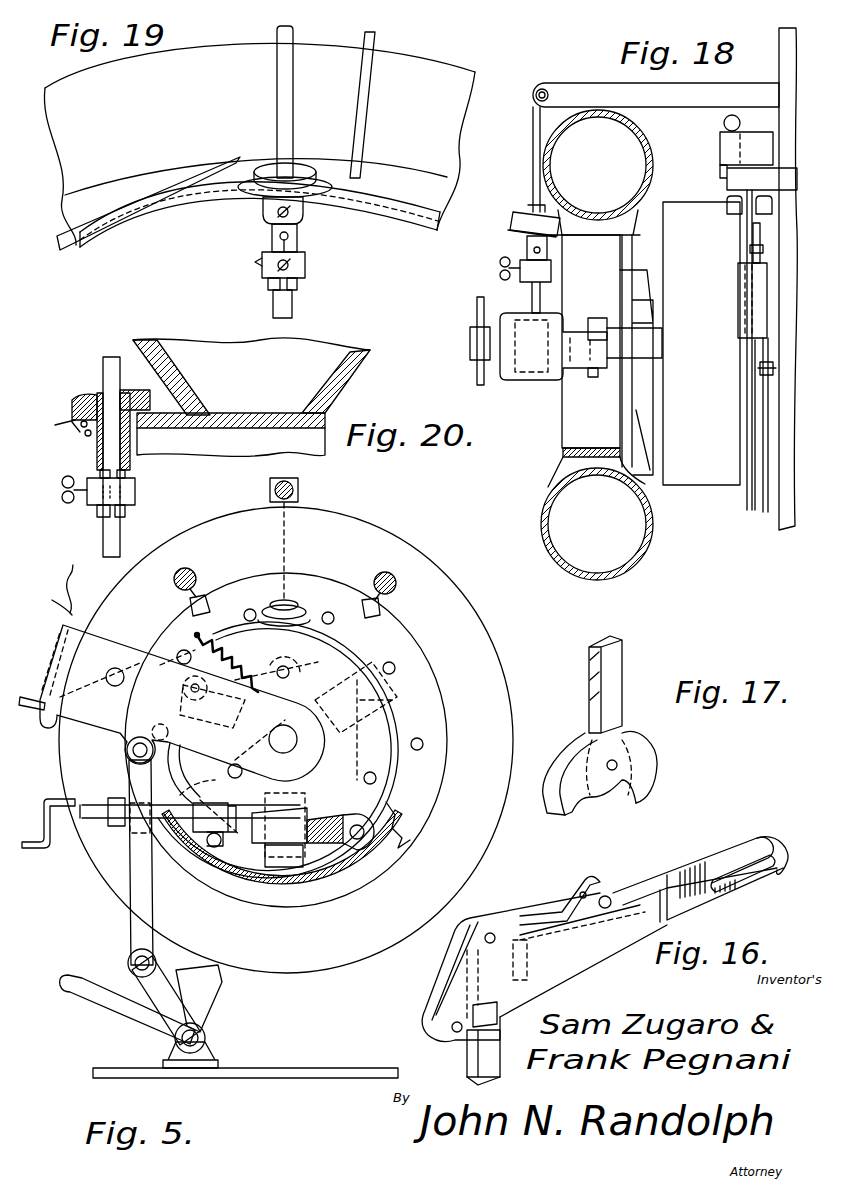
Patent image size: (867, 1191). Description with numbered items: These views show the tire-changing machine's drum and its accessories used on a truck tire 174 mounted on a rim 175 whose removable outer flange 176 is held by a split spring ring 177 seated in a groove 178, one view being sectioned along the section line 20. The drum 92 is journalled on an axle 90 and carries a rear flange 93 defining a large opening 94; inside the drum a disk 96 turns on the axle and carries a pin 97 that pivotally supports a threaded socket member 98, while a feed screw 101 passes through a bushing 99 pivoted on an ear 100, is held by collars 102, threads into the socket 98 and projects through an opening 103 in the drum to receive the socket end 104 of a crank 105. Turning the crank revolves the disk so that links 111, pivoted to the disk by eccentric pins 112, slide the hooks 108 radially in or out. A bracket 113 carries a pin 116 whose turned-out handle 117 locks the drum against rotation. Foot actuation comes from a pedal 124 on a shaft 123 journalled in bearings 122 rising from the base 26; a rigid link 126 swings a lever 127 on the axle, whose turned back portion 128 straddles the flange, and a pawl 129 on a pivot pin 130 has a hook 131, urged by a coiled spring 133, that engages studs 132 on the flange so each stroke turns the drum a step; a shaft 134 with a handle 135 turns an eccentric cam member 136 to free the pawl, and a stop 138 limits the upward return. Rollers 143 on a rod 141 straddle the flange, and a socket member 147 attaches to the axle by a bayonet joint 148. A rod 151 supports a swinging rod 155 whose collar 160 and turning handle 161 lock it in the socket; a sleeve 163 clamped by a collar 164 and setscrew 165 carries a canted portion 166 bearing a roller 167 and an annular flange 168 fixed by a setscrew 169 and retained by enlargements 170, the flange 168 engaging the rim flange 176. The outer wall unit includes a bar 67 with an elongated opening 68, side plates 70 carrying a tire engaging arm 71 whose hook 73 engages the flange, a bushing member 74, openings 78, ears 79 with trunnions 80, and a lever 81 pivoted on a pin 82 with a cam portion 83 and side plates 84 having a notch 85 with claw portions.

In FIG. 19, the section line 20 is at (284, 333).
In FIG. 5, the base 26 is at (275, 1068).
In FIG. 16, the bar 67 is at (690, 905).
In FIG. 16, the elongated opening 68 is at (735, 885).
In FIG. 16, the side plates 70 is at (600, 945).
In FIG. 16, the tire engaging arm 71 is at (467, 1046).
In FIG. 19, the hook-like end 73 is at (370, 124).
In FIG. 16, the hook-like end 73 is at (470, 1075).
In FIG. 16, the bushing member 74 is at (432, 1010).
In FIG. 16, the opening 78 is at (500, 1017).
In FIG. 16, the upstanding ears 79 is at (572, 900).
In FIG. 16, the trunnion 80 is at (598, 890).
In FIG. 17, the lever 81 is at (625, 678).
In FIG. 17, the pin 82 is at (611, 762).
In FIG. 17, the rounded cam portion 83 is at (632, 805).
In FIG. 17, the plates 84 is at (652, 735).
In FIG. 17, the notch 85 is at (578, 812).
In FIG. 5, the axle 90 is at (278, 725).
In FIG. 18, the drum 92 is at (680, 485).
In FIG. 5, the drum 92 is at (255, 881).
In FIG. 18, the flange 93 is at (747, 510).
In FIG. 5, the flange 93 is at (443, 781).
In FIG. 5, the opening 94 is at (405, 738).
In FIG. 5, the disk 96 is at (378, 790).
In FIG. 5, the pin 97 is at (365, 845).
In FIG. 5, the threaded socket member 98 is at (285, 855).
In FIG. 5, the bushing 99 is at (212, 852).
In FIG. 5, the ear 100 is at (255, 870).
In FIG. 5, the feed screw 101 is at (225, 775).
In FIG. 5, the collars 102 is at (218, 798).
In FIG. 5, the opening 103 is at (205, 843).
In FIG. 5, the socket end 104 is at (112, 827).
In FIG. 5, the crank 105 is at (80, 798).
In FIG. 18, the hook 108 is at (665, 425).
In FIG. 5, the link 111 is at (287, 665).
In FIG. 5, the pins 112 is at (292, 672).
In FIG. 18, the supporting bracket 113 is at (740, 140).
In FIG. 18, the pin 116 is at (727, 168).
In FIG. 18, the handle 117 is at (724, 124).
In FIG. 5, the bearings 122 is at (215, 1058).
In FIG. 5, the shaft 123 is at (210, 1038).
In FIG. 5, the foot pedal 124 is at (110, 995).
In FIG. 18, the rigid link 126 is at (766, 515).
In FIG. 5, the rigid link 126 is at (145, 918).
In FIG. 18, the lever 127 is at (770, 312).
In FIG. 5, the lever 127 is at (125, 745).
In FIG. 18, the turned back portion 128 is at (738, 290).
In FIG. 18, the pawl 129 is at (752, 232).
In FIG. 5, the pawl 129 is at (150, 655).
In FIG. 5, the pivot pin 130 is at (108, 681).
In FIG. 5, the hook 131 is at (205, 640).
In FIG. 18, the studs 132 is at (752, 249).
In FIG. 5, the studs 132 is at (183, 650).
In FIG. 5, the coiled spring 133 is at (233, 661).
In FIG. 5, the shaft 134 is at (87, 589).
In FIG. 5, the handle 135 is at (51, 596).
In FIG. 5, the eccentric cam member 136 is at (36, 708).
In FIG. 5, the stop 138 is at (215, 992).
In FIG. 18, the rod 141 is at (727, 186).
In FIG. 5, the rod 141 is at (395, 575).
In FIG. 18, the rollers 143 is at (727, 207).
In FIG. 5, the rollers 143 is at (385, 606).
In FIG. 18, the socket member 147 is at (530, 385).
In FIG. 18, the bayonet joint 148 is at (596, 316).
In FIG. 18, the rod 151 is at (700, 93).
In FIG. 5, the rod 151 is at (300, 490).
In FIG. 19, the rod 155 is at (289, 100).
In FIG. 18, the rod 155 is at (533, 150).
In FIG. 20, the rod 155 is at (118, 528).
In FIG. 5, the rod 155 is at (290, 535).
In FIG. 18, the collar 160 is at (502, 380).
In FIG. 18, the turning handle 161 is at (478, 372).
In FIG. 19, the sleeve 163 is at (272, 238).
In FIG. 18, the sleeve 163 is at (527, 246).
In FIG. 20, the sleeve 163 is at (130, 468).
In FIG. 19, the collar 164 is at (305, 262).
In FIG. 18, the collar 164 is at (520, 280).
In FIG. 20, the collar 164 is at (136, 486).
In FIG. 19, the setscrew 165 is at (262, 265).
In FIG. 18, the setscrew 165 is at (493, 267).
In FIG. 20, the setscrew 165 is at (70, 505).
In FIG. 20, the canted portion 166 is at (86, 398).
In FIG. 19, the roller 167 is at (290, 165).
In FIG. 18, the roller 167 is at (524, 210).
In FIG. 20, the roller 167 is at (72, 405).
In FIG. 19, the annular flange 168 is at (255, 200).
In FIG. 18, the annular flange 168 is at (510, 228).
In FIG. 20, the annular flange 168 is at (68, 430).
In FIG. 19, the setscrew 169 is at (302, 213).
In FIG. 20, the setscrew 169 is at (88, 440).
In FIG. 20, the enlargements 170 is at (148, 438).
In FIG. 19, the tire 174 is at (448, 134).
In FIG. 18, the tire 174 is at (632, 138).
In FIG. 20, the tire 174 is at (325, 388).
In FIG. 19, the rim 175 is at (362, 211).
In FIG. 18, the rim 175 is at (562, 425).
In FIG. 20, the rim 175 is at (262, 452).
In FIG. 19, the outer flange 176 is at (440, 196).
In FIG. 18, the outer flange 176 is at (552, 462).
In FIG. 20, the outer flange 176 is at (180, 372).
In FIG. 19, the split spring ring 177 is at (172, 195).
In FIG. 20, the groove 178 is at (200, 395).